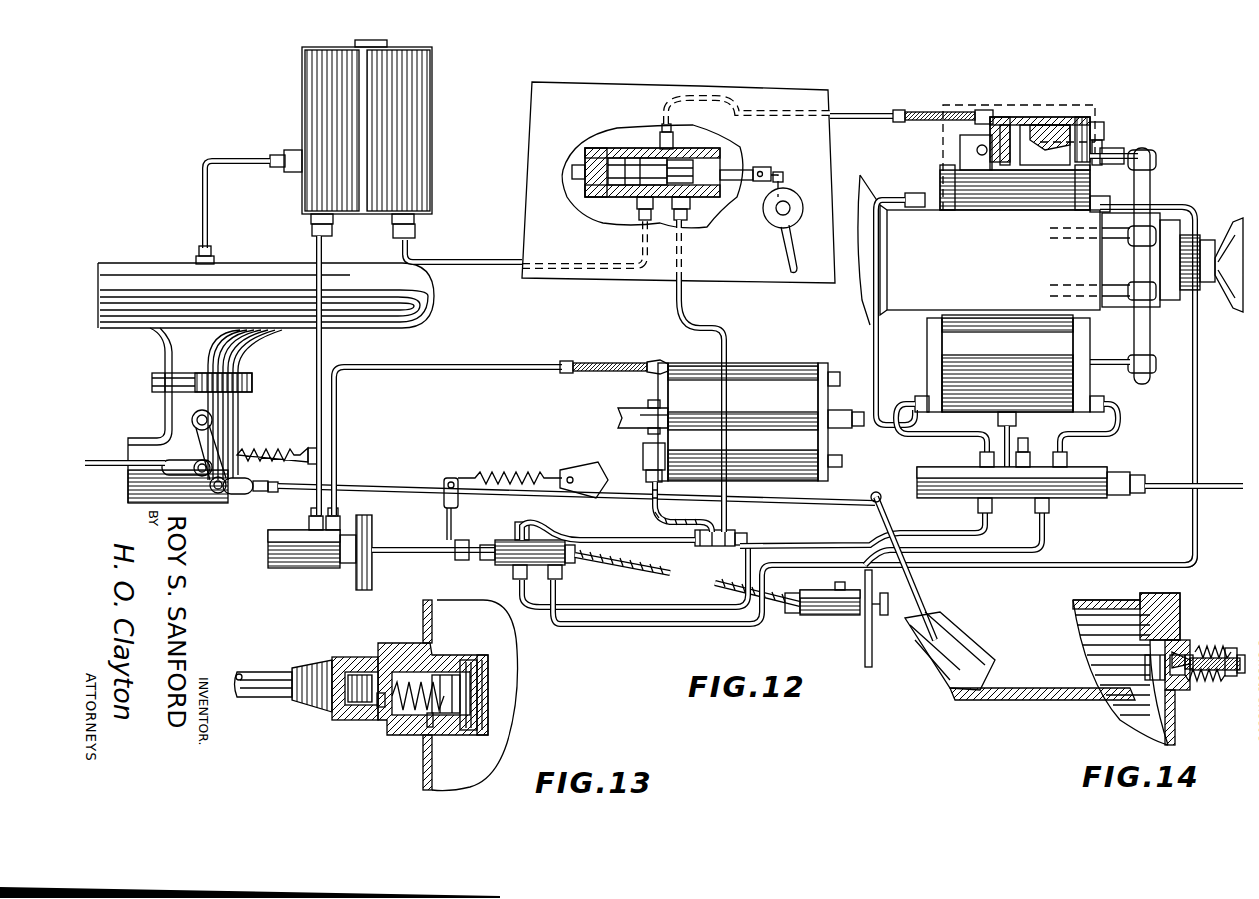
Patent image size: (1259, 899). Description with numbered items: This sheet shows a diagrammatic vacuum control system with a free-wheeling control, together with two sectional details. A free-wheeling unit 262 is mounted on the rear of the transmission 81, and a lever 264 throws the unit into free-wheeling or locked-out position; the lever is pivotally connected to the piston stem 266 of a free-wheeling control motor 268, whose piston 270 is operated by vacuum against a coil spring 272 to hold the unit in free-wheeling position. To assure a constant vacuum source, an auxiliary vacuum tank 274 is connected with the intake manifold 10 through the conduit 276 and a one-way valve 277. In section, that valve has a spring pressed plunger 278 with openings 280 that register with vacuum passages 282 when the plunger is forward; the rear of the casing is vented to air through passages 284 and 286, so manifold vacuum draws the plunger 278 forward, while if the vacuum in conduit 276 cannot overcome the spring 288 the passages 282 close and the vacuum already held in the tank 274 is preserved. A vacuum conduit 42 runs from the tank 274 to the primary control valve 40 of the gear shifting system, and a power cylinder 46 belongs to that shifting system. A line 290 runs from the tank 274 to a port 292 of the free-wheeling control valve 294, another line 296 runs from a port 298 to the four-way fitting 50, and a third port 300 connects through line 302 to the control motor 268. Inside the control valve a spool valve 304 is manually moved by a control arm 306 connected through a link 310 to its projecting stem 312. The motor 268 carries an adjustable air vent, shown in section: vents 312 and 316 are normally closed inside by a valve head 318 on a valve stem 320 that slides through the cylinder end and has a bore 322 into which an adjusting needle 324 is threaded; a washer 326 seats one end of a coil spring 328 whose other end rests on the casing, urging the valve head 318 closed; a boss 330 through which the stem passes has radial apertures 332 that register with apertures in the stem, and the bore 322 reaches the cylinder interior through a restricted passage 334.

In FIG. 12, the intake manifold 10 is at (143, 285).
In FIG. 12, the primary control valve 40 is at (290, 553).
In FIG. 12, the vacuum conduit 42 is at (325, 365).
In FIG. 12, the power cylinder 46 is at (778, 378).
In FIG. 12, the fitting 50 is at (708, 548).
In FIG. 12, the transmission 81 is at (905, 225).
In FIG. 12, the free-wheeling unit 262 is at (1170, 232).
In FIG. 12, the lever 264 is at (1152, 180).
In FIG. 12, the piston stem 266 is at (1105, 146).
In FIG. 12, the free-wheeling control motor 268 is at (1020, 130).
In FIG. 14, the free-wheeling control motor 268 is at (1075, 600).
In FIG. 12, the piston 270 is at (1030, 140).
In FIG. 12, the coil spring 272 is at (1003, 120).
In FIG. 12, the auxiliary vacuum tank 274 is at (326, 118).
In FIG. 13, the auxiliary vacuum tank 274 is at (418, 780).
In FIG. 12, the conduit 276 is at (208, 218).
In FIG. 13, the conduit 276 is at (268, 672).
In FIG. 12, the one-way valve 277 is at (278, 147).
In FIG. 13, the one-way valve 277 is at (359, 653).
In FIG. 13, the spring pressed plunger 278 is at (460, 663).
In FIG. 13, the openings 280 is at (395, 733).
In FIG. 13, the vacuum passages 282 is at (330, 717).
In FIG. 13, the passage 284 is at (378, 645).
In FIG. 13, the passage 286 is at (490, 660).
In FIG. 13, the spring 288 is at (378, 718).
In FIG. 12, the line 290 is at (452, 262).
In FIG. 12, the port 292 is at (632, 193).
In FIG. 12, the free-wheeling control valve 294 is at (617, 147).
In FIG. 12, the line 296 is at (700, 327).
In FIG. 12, the port 298 is at (687, 205).
In FIG. 12, the third port 300 is at (677, 150).
In FIG. 12, the line 302 is at (845, 116).
In FIG. 12, the spool valve 304 is at (633, 167).
In FIG. 12, the control arm 306 is at (788, 233).
In FIG. 12, the link 310 is at (753, 170).
In FIG. 12, the projecting stem / vent 312 is at (720, 167).
In FIG. 14, the projecting stem / vent 312 is at (1185, 640).
In FIG. 14, the vent 316 is at (1180, 712).
In FIG. 14, the valve head 318 is at (1172, 690).
In FIG. 14, the valve stem 320 is at (1216, 652).
In FIG. 14, the bore 322 is at (1200, 657).
In FIG. 14, the adjusting needle 324 is at (1232, 678).
In FIG. 14, the washer 326 is at (1240, 675).
In FIG. 14, the coil spring 328 is at (1190, 655).
In FIG. 14, the boss 330 is at (1200, 682).
In FIG. 14, the apertures 332 is at (1182, 652).
In FIG. 14, the restricted passage 334 is at (1148, 675).